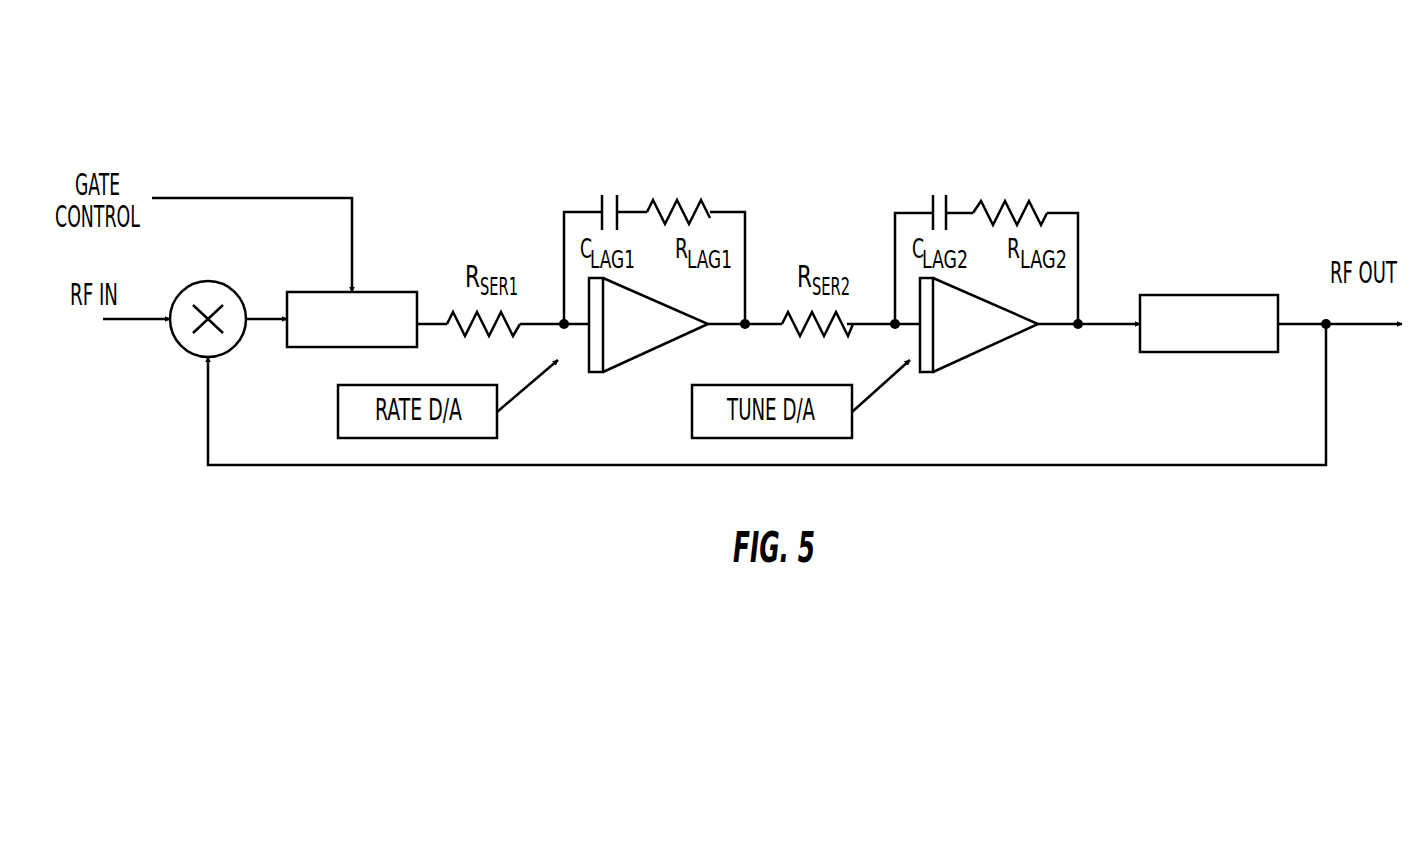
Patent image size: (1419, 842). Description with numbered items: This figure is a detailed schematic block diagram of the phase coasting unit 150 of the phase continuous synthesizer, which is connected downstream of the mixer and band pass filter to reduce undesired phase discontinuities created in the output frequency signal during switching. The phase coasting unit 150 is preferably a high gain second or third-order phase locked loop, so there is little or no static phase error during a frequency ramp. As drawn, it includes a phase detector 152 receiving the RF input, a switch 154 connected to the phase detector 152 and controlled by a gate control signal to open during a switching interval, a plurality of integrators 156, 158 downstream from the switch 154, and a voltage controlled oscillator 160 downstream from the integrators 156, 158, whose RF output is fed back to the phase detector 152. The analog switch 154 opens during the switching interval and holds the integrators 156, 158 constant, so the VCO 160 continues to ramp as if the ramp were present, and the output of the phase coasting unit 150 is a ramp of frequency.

The phase coasting unit 150 is at (843, 135).
The phase detector 152 is at (185, 287).
The switch 154 is at (318, 348).
The integrator 156 is at (632, 360).
The integrator 158 is at (977, 357).
The voltage controlled oscillator 160 is at (1188, 352).